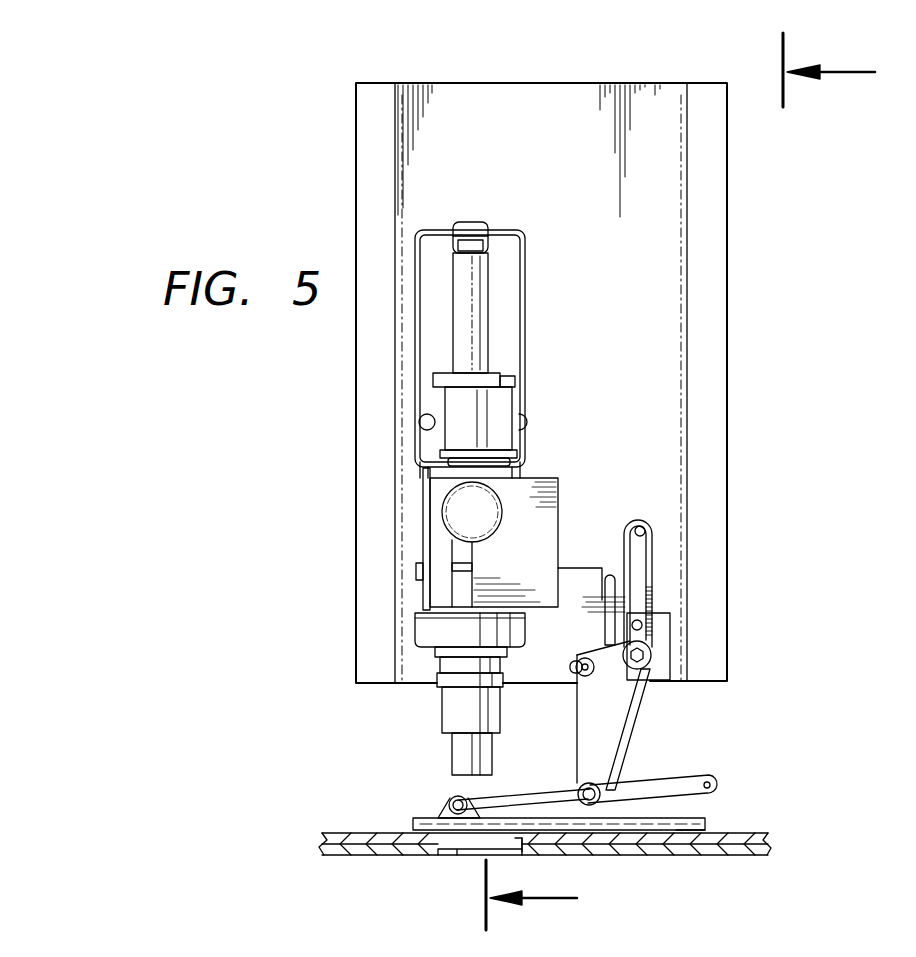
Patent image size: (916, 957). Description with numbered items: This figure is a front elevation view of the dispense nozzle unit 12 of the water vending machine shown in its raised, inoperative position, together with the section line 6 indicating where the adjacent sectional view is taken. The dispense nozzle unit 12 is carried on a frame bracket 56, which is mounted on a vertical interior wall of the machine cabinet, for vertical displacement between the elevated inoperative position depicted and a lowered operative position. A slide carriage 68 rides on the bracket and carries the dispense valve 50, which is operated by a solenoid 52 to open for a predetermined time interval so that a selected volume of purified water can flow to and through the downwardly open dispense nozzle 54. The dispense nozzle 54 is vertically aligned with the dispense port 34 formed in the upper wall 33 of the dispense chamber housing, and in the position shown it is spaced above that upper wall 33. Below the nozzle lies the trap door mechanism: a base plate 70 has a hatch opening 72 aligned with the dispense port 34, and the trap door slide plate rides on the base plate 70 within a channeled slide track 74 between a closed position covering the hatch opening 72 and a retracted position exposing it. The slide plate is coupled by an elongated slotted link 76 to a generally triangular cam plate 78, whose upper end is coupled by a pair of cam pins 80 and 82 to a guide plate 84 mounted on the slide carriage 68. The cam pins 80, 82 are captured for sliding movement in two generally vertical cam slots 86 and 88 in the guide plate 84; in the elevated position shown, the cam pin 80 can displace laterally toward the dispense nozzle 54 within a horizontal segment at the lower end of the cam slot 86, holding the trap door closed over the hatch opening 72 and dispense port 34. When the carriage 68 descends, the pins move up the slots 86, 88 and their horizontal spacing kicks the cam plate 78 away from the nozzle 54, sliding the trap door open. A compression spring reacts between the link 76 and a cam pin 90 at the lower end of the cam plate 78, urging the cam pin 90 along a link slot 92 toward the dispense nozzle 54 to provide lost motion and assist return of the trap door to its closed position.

The section line 6- 6 is at (695, 481).
The dispense nozzle unit 12 is at (285, 562).
The upper wall 33 is at (350, 856).
The dispense port 34 is at (455, 850).
The dispense valve 50 is at (435, 493).
The solenoid 52 is at (457, 412).
The dispense nozzle 54 is at (458, 705).
The frame bracket 56 is at (461, 83).
The slide carriage 68 is at (526, 310).
The base plate 70 is at (353, 832).
The hatch opening 72 is at (518, 846).
The channeled slide track 74 is at (680, 828).
The slotted link 76 is at (688, 790).
The cam plate 78 is at (604, 726).
The cam pin 80 is at (587, 658).
The cam pin 82 is at (650, 660).
The guide plate 84 is at (540, 688).
The cam slot 86 is at (610, 575).
The cam slot 88 is at (640, 520).
The cam pin 90 is at (568, 788).
The link slot 92 is at (510, 797).